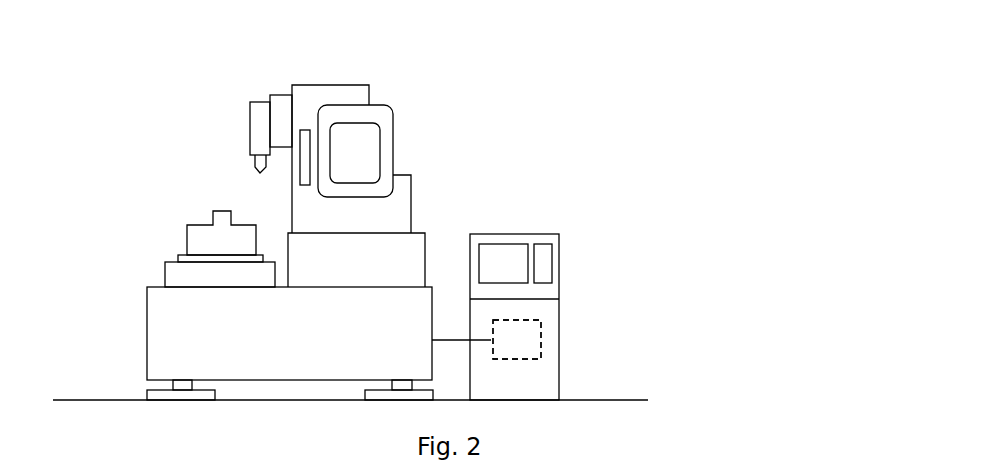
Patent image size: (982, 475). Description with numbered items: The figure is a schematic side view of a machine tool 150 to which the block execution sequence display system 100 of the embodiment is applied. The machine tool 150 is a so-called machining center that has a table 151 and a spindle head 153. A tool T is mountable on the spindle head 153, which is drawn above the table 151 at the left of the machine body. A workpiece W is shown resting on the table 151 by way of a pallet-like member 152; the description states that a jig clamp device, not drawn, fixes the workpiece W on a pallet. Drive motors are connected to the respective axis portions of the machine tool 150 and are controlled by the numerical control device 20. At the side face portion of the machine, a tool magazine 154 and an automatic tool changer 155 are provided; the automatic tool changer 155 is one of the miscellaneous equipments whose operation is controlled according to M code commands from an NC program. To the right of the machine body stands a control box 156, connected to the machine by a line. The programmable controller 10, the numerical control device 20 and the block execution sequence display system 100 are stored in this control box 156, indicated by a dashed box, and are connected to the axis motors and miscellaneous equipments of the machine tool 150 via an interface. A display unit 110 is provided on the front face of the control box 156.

The block execution sequence display system 100 is at (595, 255).
The machine tool 150 is at (461, 144).
The table 151 is at (165, 270).
The workpiece holding plate / jig 152 is at (221, 255).
The workpiece W is at (188, 226).
The spindle head 153 is at (250, 132).
The tool T is at (255, 165).
The tool magazine 154 is at (388, 108).
The automatic tool changer (ATC) 155 is at (304, 128).
The control box 156 is at (502, 233).
The display unit 110 is at (527, 243).
The programmable controller 10 is at (543, 327).
The numerical control device 20 is at (543, 327).